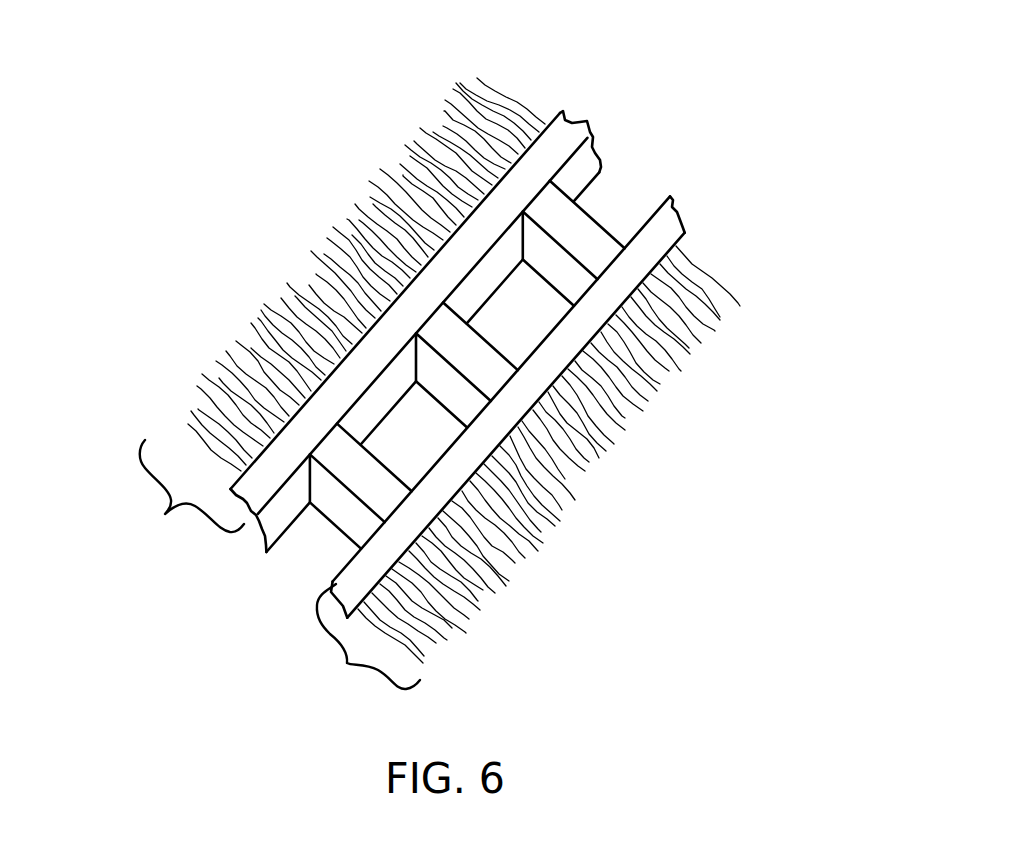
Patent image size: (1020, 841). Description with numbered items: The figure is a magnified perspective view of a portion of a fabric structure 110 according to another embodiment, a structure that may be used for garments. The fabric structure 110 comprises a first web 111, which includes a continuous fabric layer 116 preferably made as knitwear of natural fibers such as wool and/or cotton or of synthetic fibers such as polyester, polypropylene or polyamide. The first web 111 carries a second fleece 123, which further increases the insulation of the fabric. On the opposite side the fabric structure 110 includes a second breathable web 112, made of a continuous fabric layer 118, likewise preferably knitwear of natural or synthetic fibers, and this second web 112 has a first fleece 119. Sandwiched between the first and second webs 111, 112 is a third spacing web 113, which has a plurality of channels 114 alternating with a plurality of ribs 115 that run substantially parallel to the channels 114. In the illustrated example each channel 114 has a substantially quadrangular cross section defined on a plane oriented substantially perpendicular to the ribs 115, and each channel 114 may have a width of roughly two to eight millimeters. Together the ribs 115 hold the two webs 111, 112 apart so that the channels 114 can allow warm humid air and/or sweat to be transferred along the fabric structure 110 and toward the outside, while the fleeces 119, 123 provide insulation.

The fabric structure 110 is at (508, 318).
The first web 111 is at (163, 513).
The second breathable web 112 is at (340, 673).
The third spacing web 113 is at (323, 545).
The channels 114 is at (413, 432).
The ribs 115 is at (334, 452).
The continuous fabric layer 116 is at (590, 118).
The continuous fabric layer 118 is at (662, 265).
The first fleece 119 is at (598, 412).
The second fleece 123 is at (350, 228).